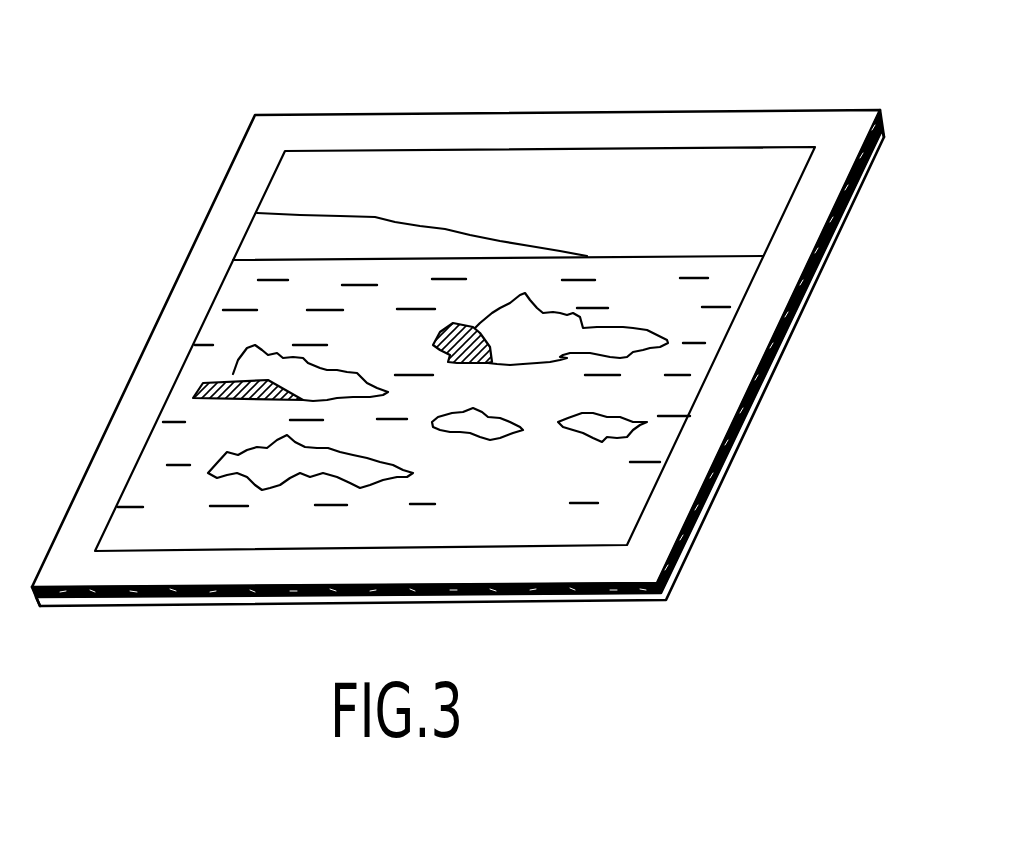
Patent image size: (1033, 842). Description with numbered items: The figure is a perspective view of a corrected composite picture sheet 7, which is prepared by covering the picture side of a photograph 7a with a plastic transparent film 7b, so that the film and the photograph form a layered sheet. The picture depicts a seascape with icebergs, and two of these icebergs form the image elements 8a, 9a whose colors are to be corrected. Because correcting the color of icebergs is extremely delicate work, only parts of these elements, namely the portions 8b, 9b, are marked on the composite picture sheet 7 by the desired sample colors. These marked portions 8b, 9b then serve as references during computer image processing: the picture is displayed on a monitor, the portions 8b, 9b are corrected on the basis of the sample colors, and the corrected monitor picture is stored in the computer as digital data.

The corrected composite picture sheet 7 is at (471, 355).
The photograph 7a is at (582, 595).
The plastic transparent film 7b is at (847, 122).
The image element 8a is at (551, 342).
The portion to be corrected 8b is at (476, 367).
The image element 9a is at (290, 375).
The portion to be corrected 9b is at (258, 397).